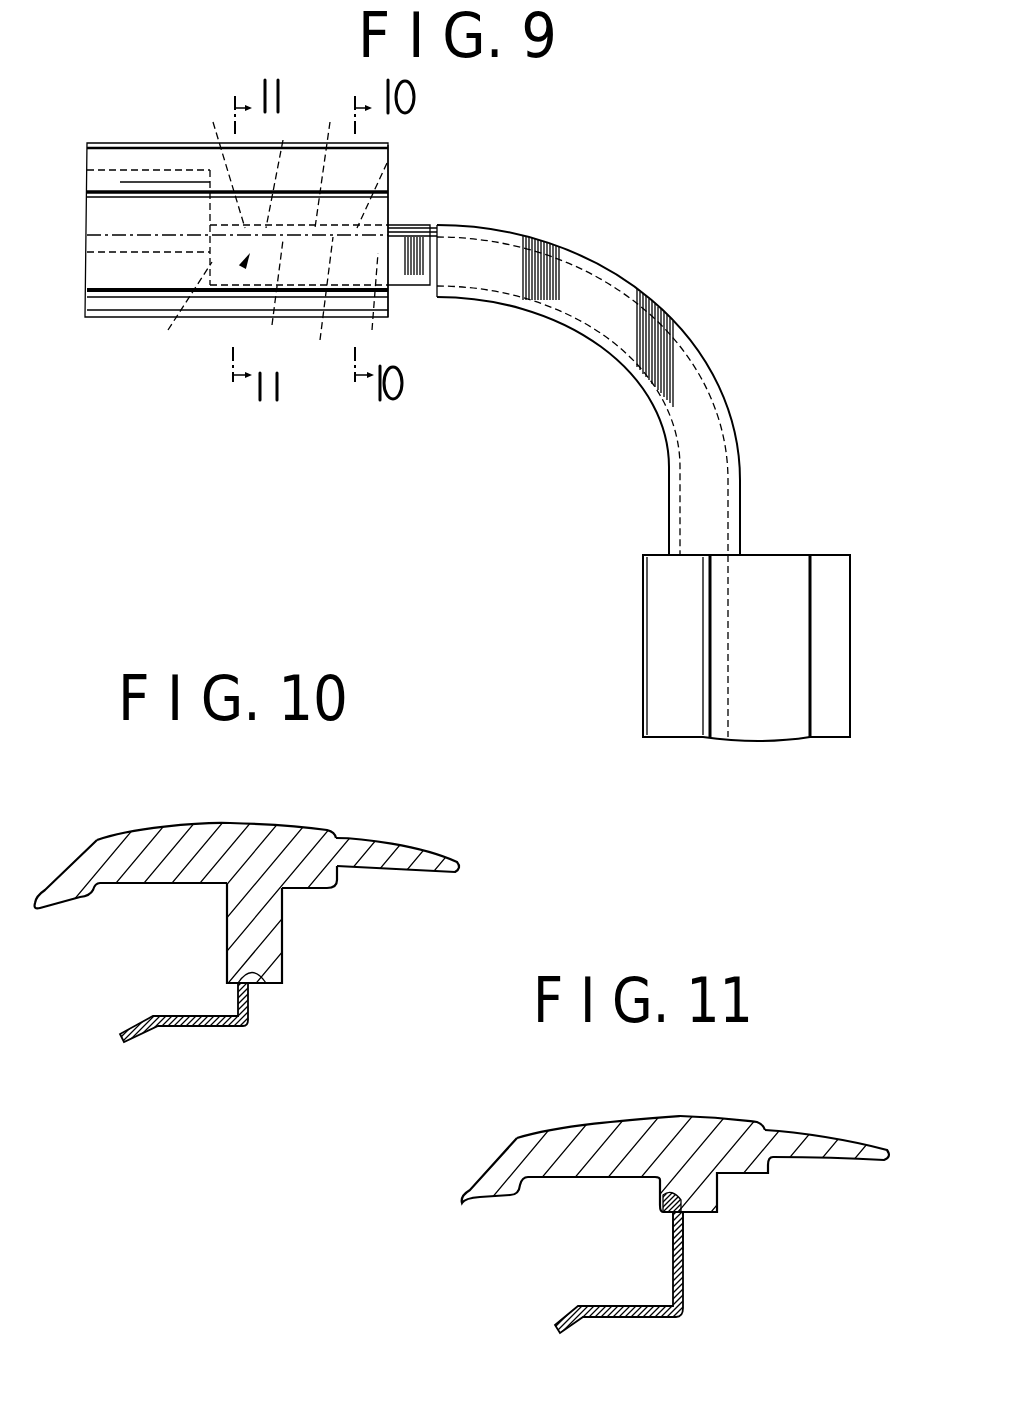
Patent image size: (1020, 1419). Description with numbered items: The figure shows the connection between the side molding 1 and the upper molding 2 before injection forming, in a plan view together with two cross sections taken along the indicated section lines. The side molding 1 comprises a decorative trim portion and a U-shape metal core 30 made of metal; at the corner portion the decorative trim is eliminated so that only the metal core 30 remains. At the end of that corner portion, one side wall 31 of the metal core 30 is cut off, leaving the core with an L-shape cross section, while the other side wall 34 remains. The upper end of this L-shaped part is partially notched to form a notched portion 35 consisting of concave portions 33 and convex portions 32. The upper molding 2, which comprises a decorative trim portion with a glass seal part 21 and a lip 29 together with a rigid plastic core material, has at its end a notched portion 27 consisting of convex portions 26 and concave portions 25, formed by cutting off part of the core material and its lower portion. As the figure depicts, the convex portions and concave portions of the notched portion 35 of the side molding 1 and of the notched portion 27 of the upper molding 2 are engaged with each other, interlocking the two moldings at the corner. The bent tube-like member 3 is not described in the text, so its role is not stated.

In FIG. 9, the side molding 1 is at (826, 550).
In FIG. 9, the upper molding 2 is at (80, 259).
In FIG. 10, the upper molding 2 is at (268, 835).
In FIG. 11, the upper molding 2 is at (712, 1132).
In FIG. 9, the bent tube 3 is at (668, 300).
In FIG. 10, the glass seal part 21 is at (153, 885).
In FIG. 11, the glass seal part 21 is at (563, 1180).
In FIG. 9, the concave portions 25 is at (236, 305).
In FIG. 11, the concave portions 25 is at (683, 1230).
In FIG. 9, the convex portions 26 is at (321, 302).
In FIG. 10, the convex portions 26 is at (273, 985).
In FIG. 9, the notched portion 27 is at (380, 217).
In FIG. 10, the lip 29 is at (420, 853).
In FIG. 11, the lip 29 is at (853, 1148).
In FIG. 10, the metal core 30 is at (247, 1018).
In FIG. 11, the metal core 30 is at (685, 1298).
In FIG. 9, the side wall 31 is at (428, 273).
In FIG. 9, the convex portions 32 is at (441, 208).
In FIG. 11, the convex portions 32 is at (663, 1197).
In FIG. 9, the concave portions 33 is at (403, 158).
In FIG. 10, the concave portions 33 is at (262, 978).
In FIG. 9, the other side wall 34 is at (400, 277).
In FIG. 9, the notched portion 35 is at (240, 272).